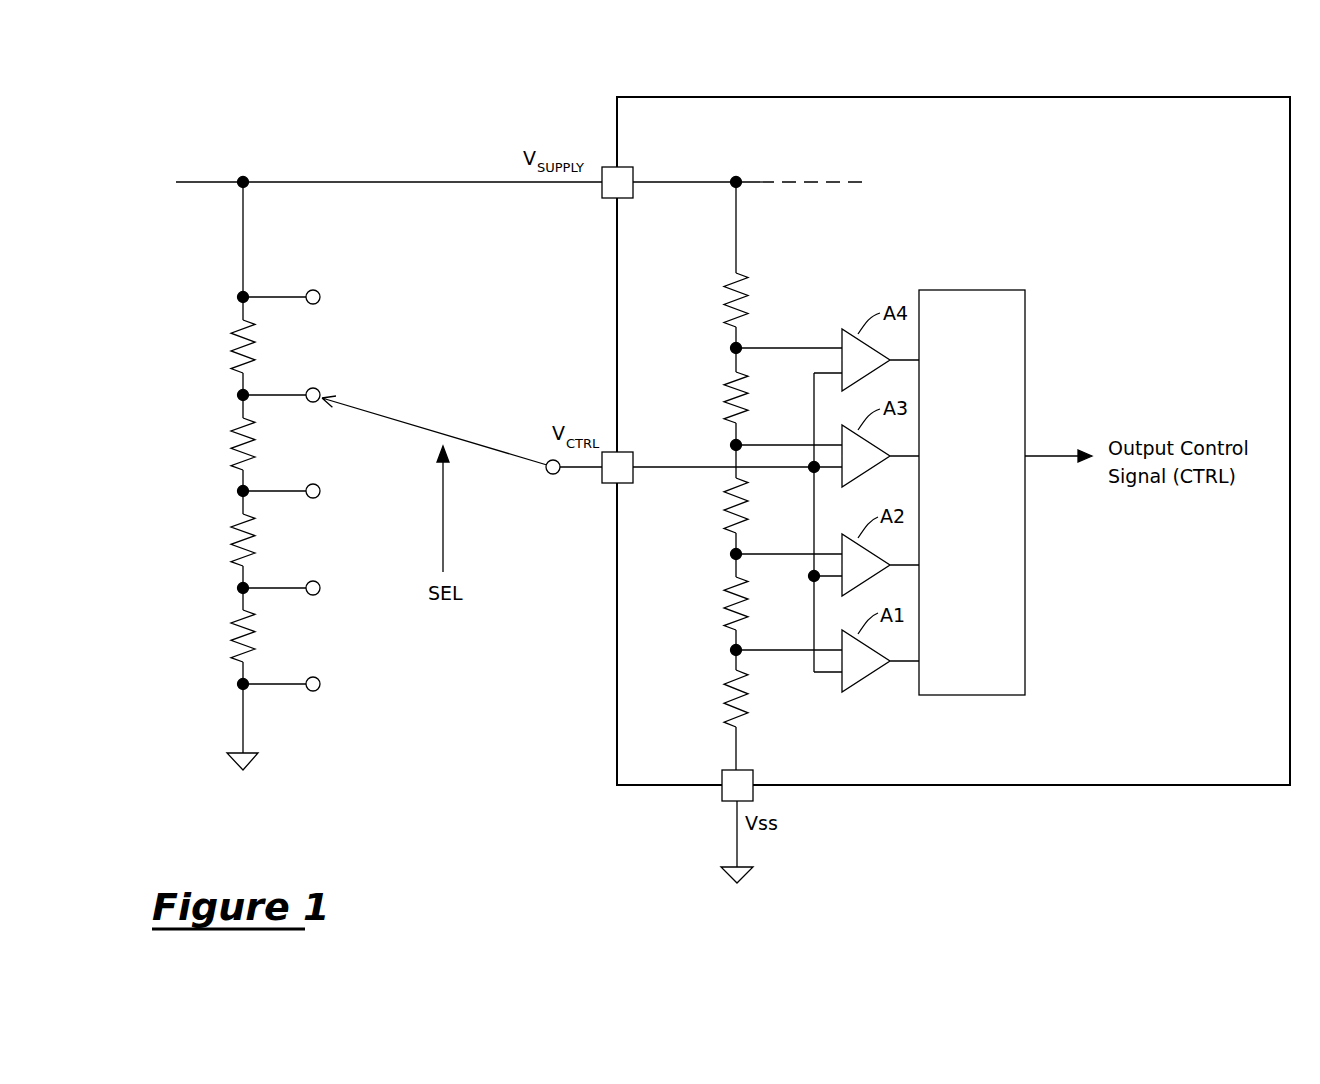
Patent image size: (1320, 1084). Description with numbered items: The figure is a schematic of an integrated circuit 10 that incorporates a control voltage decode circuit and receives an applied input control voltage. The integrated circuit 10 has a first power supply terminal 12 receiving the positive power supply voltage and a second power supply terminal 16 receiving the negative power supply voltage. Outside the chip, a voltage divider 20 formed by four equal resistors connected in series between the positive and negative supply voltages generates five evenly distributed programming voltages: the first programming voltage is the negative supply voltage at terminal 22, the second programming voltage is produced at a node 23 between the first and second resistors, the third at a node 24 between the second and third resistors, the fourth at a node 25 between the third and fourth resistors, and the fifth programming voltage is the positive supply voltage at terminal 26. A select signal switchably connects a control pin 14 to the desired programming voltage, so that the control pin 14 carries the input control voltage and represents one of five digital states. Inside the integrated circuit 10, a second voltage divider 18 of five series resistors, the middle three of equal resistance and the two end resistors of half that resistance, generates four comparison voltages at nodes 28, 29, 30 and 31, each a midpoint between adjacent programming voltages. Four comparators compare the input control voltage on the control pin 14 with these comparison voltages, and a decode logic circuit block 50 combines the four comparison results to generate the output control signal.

The integrated circuit 10 is at (1124, 97).
The first power supply terminal 12 is at (602, 190).
The control pin 14 is at (602, 478).
The second power supply terminal 16 is at (722, 794).
The voltage divider 18 is at (750, 249).
The voltage divider 20 is at (203, 293).
The terminal V1 22 is at (319, 689).
The node 23 is at (319, 593).
The node 24 is at (319, 496).
The node 25 is at (319, 400).
The terminal V5 26 is at (319, 302).
The node VM1 28 is at (742, 654).
The node VM2 29 is at (742, 558).
The node VM3 30 is at (730, 445).
The node VM4 31 is at (742, 352).
The decode logic circuit block 50 is at (972, 492).